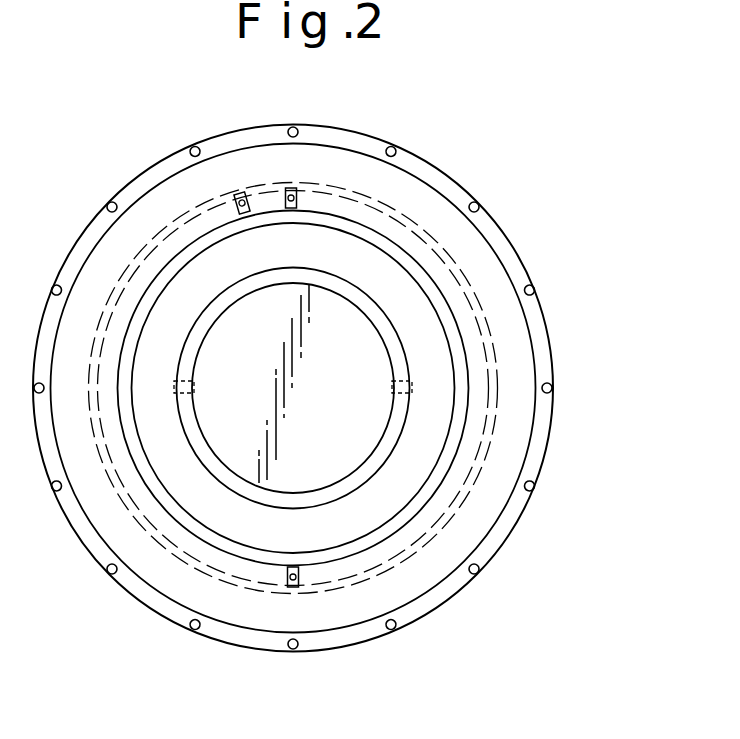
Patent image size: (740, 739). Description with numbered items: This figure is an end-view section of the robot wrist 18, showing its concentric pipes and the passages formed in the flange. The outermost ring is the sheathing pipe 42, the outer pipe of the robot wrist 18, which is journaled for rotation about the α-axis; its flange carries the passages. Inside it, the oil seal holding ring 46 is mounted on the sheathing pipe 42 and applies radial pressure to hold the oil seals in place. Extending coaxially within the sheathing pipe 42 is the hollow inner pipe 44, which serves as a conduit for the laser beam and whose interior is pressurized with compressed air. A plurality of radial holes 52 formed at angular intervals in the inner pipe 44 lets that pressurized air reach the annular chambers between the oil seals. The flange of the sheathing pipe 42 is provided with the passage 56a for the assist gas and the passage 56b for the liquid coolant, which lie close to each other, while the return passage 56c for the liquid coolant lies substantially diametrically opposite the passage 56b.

The robot wrist 18 is at (473, 183).
The oil seal holding ring 46 is at (502, 258).
The sheathing pipe 42 is at (460, 422).
The inner pipe 44 is at (372, 473).
The radial holes 52 is at (181, 381).
The passage 56a is at (236, 210).
The passage 56b is at (297, 203).
The return passage 56c is at (299, 580).